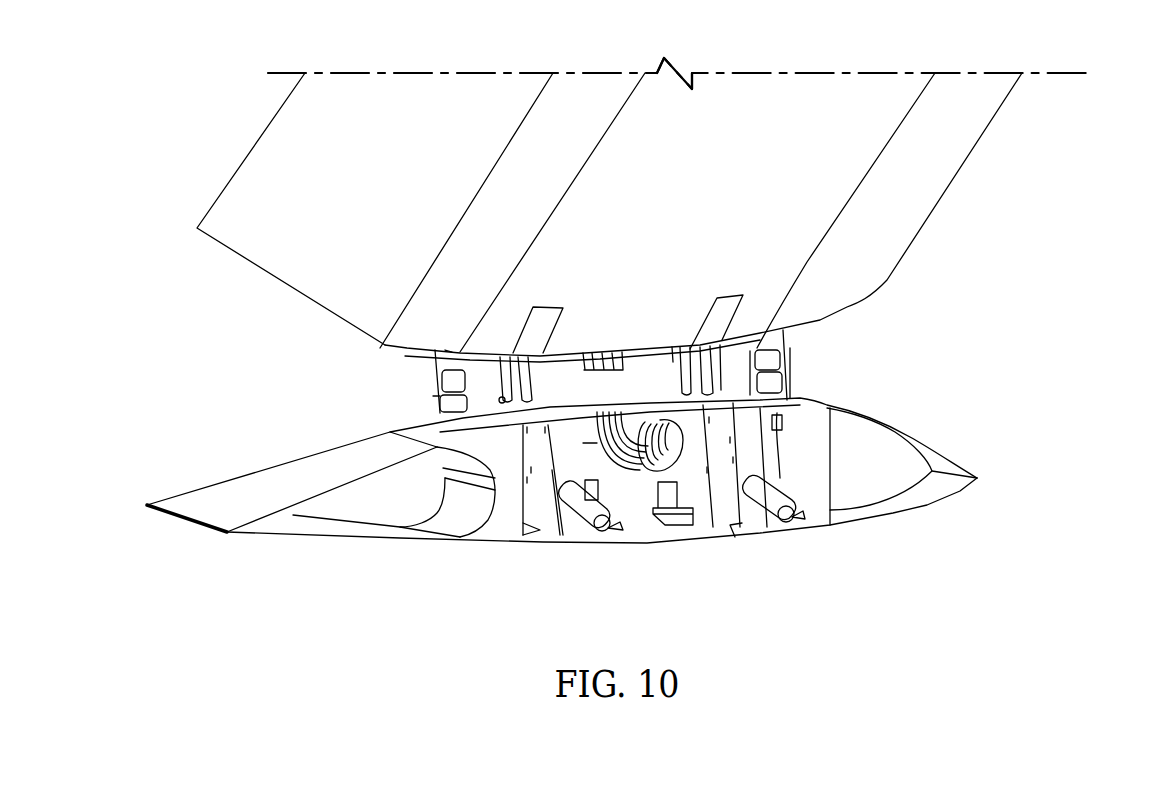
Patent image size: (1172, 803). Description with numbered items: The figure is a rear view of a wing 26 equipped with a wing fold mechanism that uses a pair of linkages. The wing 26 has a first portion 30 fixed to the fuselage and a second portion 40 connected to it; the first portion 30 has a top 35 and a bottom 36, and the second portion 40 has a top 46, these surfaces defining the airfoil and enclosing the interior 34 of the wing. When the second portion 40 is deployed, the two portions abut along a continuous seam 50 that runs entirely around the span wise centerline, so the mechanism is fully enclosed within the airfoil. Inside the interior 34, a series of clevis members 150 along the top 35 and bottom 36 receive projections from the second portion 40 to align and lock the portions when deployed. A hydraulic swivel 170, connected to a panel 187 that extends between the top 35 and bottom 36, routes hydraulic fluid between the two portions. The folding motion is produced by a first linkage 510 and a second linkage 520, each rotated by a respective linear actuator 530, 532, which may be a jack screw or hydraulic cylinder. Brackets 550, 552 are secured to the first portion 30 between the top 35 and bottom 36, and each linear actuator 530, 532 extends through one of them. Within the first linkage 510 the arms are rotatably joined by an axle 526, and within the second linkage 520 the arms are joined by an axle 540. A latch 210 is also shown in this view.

The wing 26 is at (1000, 462).
The first portion 30 is at (937, 495).
The interior 34 is at (442, 515).
The top 35 is at (292, 467).
The bottom 36 is at (333, 534).
The second portion 40 is at (955, 163).
The top 46 is at (695, 168).
The continuous seam 50 is at (887, 337).
The clevis member 150 is at (675, 535).
The hydraulic swivel 170 is at (423, 393).
The panel 187 is at (783, 478).
The latch 210 is at (607, 350).
The first linkage 510 is at (717, 372).
The second linkage 520 is at (493, 380).
The axle 526 is at (682, 390).
The linear actuator 530 is at (782, 517).
The linear actuator 532 is at (568, 502).
The axle 540 is at (502, 401).
The bracket 550 is at (740, 517).
The bracket 552 is at (557, 497).